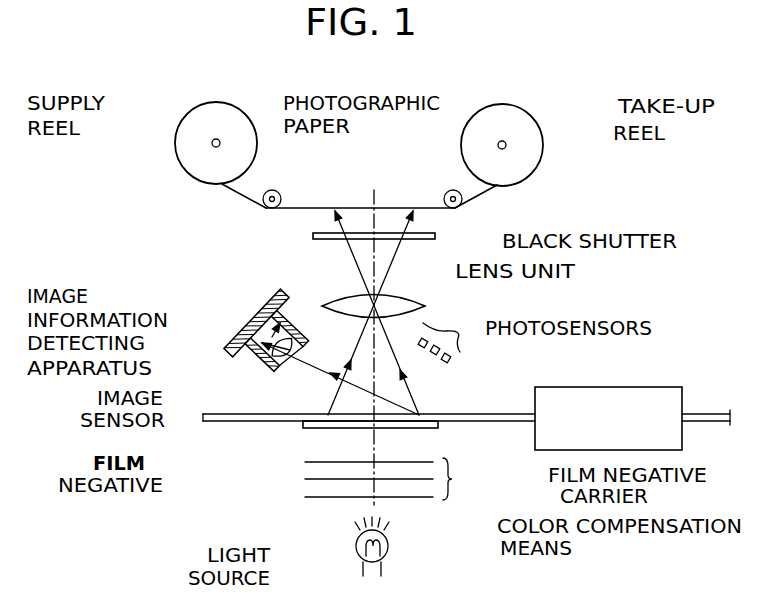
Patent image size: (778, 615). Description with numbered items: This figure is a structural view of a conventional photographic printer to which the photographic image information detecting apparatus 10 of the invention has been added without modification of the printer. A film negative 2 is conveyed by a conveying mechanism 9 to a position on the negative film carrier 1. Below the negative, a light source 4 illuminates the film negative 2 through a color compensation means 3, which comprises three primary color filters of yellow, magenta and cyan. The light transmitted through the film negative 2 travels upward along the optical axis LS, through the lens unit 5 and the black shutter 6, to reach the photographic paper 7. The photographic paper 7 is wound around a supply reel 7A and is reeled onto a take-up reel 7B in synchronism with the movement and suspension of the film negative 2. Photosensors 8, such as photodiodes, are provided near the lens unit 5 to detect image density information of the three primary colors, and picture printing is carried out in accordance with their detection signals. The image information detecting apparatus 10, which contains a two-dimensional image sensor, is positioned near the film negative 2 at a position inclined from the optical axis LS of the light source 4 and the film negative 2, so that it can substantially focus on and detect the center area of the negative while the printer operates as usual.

The negative film carrier 1 is at (428, 428).
The film negative 2 is at (233, 422).
The color compensation means 3 is at (454, 481).
The light source 4 is at (355, 545).
The lens unit 5 is at (400, 298).
The black shutter 6 is at (435, 236).
The photographic paper 7 is at (293, 207).
The supply reel 7A is at (177, 131).
The take-up reel 7B is at (538, 137).
The photosensors 8 is at (444, 339).
The conveying mechanism 9 is at (682, 387).
The image information detecting apparatus 10 is at (247, 338).
The optical axis LS is at (377, 194).